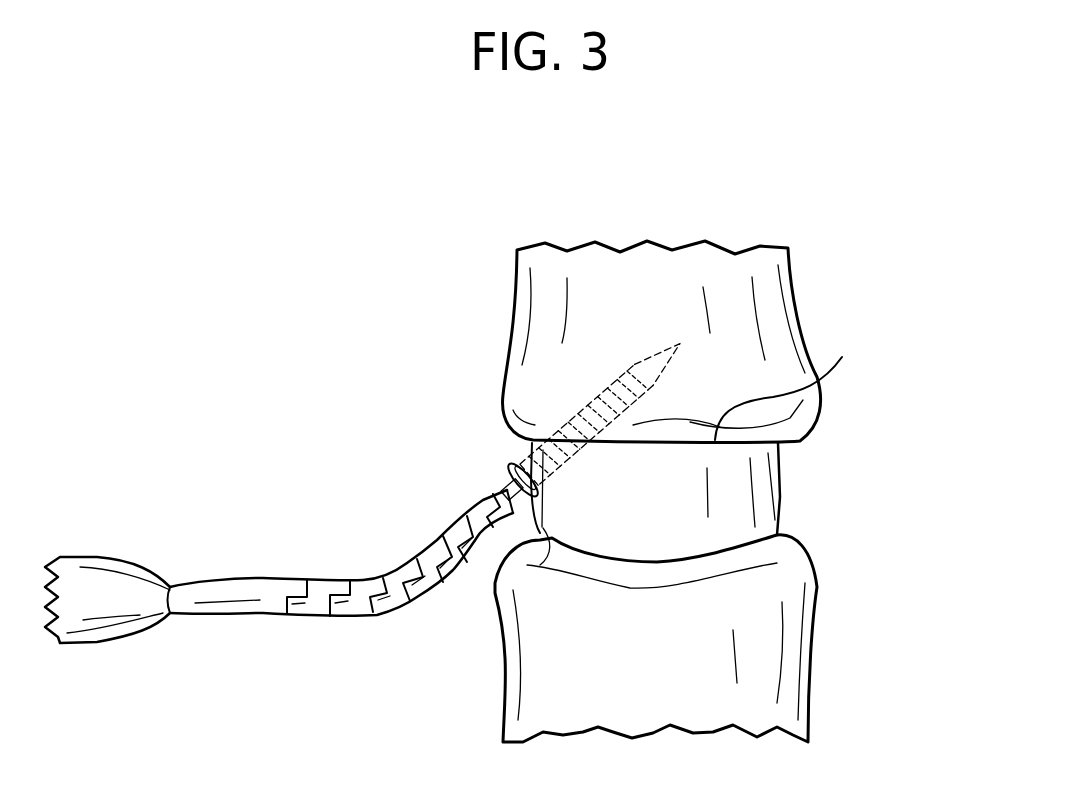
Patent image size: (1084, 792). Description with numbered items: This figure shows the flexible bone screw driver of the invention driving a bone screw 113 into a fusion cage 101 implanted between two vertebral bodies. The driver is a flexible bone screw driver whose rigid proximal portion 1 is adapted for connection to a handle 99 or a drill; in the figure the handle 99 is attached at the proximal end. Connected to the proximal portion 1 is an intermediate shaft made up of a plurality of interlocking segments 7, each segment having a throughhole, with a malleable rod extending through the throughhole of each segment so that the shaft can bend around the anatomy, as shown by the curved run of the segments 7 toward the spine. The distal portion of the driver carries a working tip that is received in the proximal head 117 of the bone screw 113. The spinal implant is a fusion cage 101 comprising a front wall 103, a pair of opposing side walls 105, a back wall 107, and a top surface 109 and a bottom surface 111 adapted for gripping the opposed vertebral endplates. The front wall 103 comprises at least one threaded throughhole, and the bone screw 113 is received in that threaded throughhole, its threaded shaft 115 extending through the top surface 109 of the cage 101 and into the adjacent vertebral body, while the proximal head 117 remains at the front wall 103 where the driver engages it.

The rigid proximal portion 1 is at (205, 580).
The interlocking segments 7 is at (377, 577).
The handle 99 is at (103, 627).
The fusion cage 101 is at (880, 448).
The front wall 103 is at (530, 562).
The opposing side walls 105 is at (680, 537).
The back wall 107 is at (783, 517).
The top surface 109 is at (810, 393).
The bottom surface 111 is at (593, 556).
The bone screw 113 is at (562, 405).
The threaded shaft 115 is at (680, 343).
The proximal head 117 is at (507, 460).